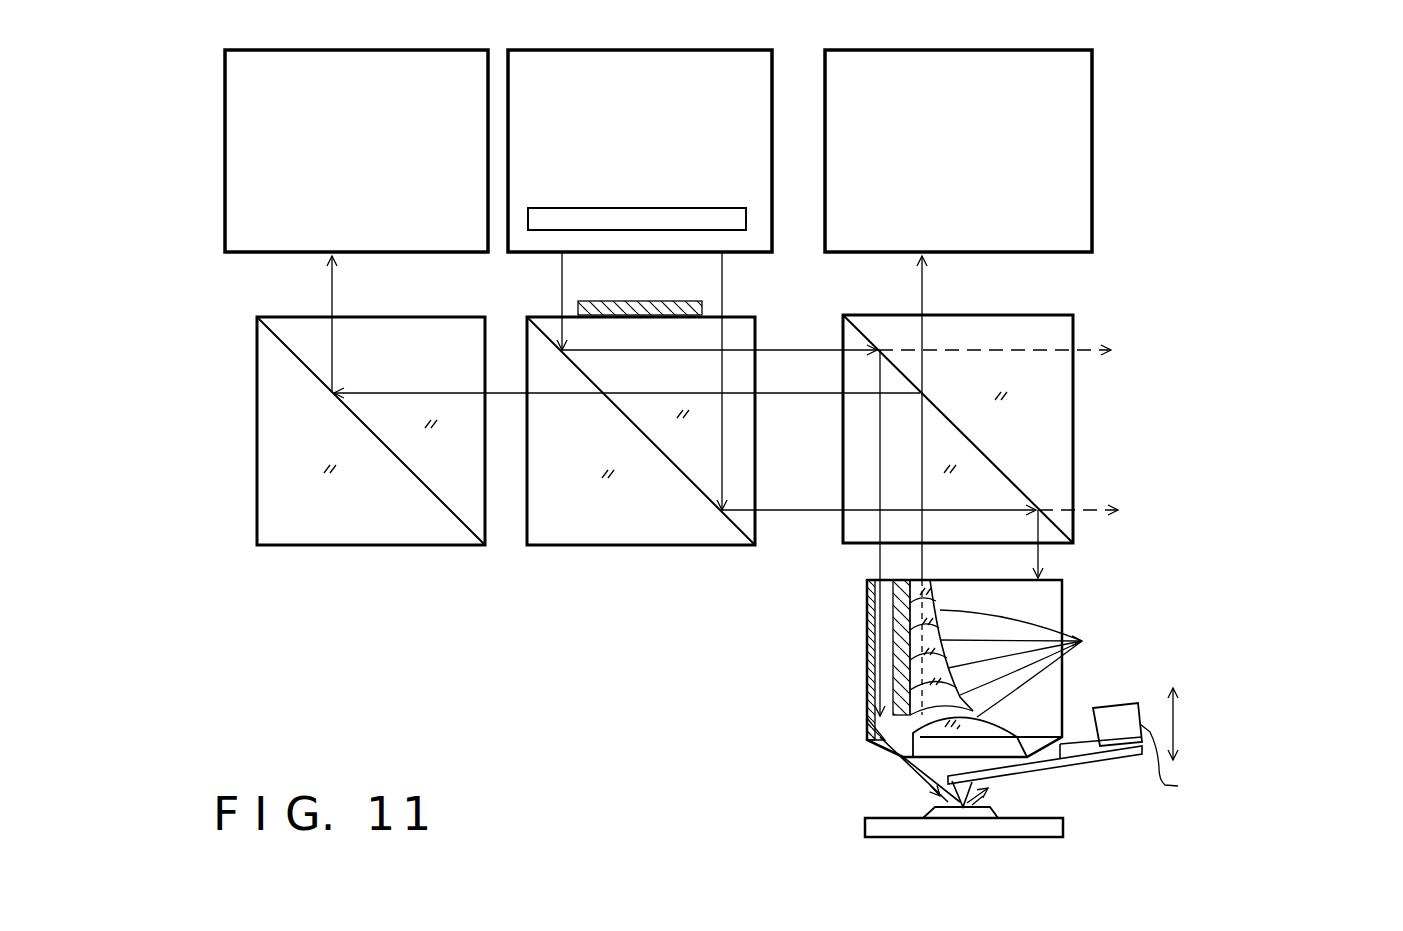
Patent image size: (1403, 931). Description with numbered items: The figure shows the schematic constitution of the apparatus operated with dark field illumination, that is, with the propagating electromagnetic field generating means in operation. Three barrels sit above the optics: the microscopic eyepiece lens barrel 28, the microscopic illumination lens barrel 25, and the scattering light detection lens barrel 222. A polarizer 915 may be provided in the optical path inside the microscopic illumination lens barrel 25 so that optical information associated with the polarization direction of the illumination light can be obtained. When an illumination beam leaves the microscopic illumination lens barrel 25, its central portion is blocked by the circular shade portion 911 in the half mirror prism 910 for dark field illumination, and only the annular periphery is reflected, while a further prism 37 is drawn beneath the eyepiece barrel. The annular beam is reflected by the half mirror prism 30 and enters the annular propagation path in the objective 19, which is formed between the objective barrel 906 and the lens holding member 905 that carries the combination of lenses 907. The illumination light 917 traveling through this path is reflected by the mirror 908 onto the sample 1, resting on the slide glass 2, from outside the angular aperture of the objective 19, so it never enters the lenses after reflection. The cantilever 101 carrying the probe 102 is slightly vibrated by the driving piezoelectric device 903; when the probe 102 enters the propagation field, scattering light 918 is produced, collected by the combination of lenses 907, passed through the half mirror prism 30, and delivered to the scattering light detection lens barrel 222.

The microscopic eyepiece lens barrel 28 is at (360, 50).
The microscopic illumination lens barrel 25 is at (637, 50).
The scattering light detection lens barrel 222 is at (943, 50).
The polarizer 915 is at (727, 220).
The circular shade portion 911 is at (597, 302).
The beam splitter 37 is at (345, 537).
The half mirror prism for dark field illumination 910 is at (620, 533).
The half mirror prism 30 is at (1060, 415).
The objective 19 is at (858, 618).
The objective barrel 906 is at (1052, 598).
The lens holding member 905 is at (890, 598).
The illumination light 917 is at (878, 656).
The mirror 908 is at (867, 725).
The combination of lenses 907 is at (1027, 668).
The scattering light 918 is at (918, 762).
The sample 1 is at (931, 813).
The slide glass 2 is at (1065, 824).
The probe 102 is at (975, 786).
The cantilever 101 is at (1075, 770).
The driving piezoelectric device 903 is at (1128, 705).